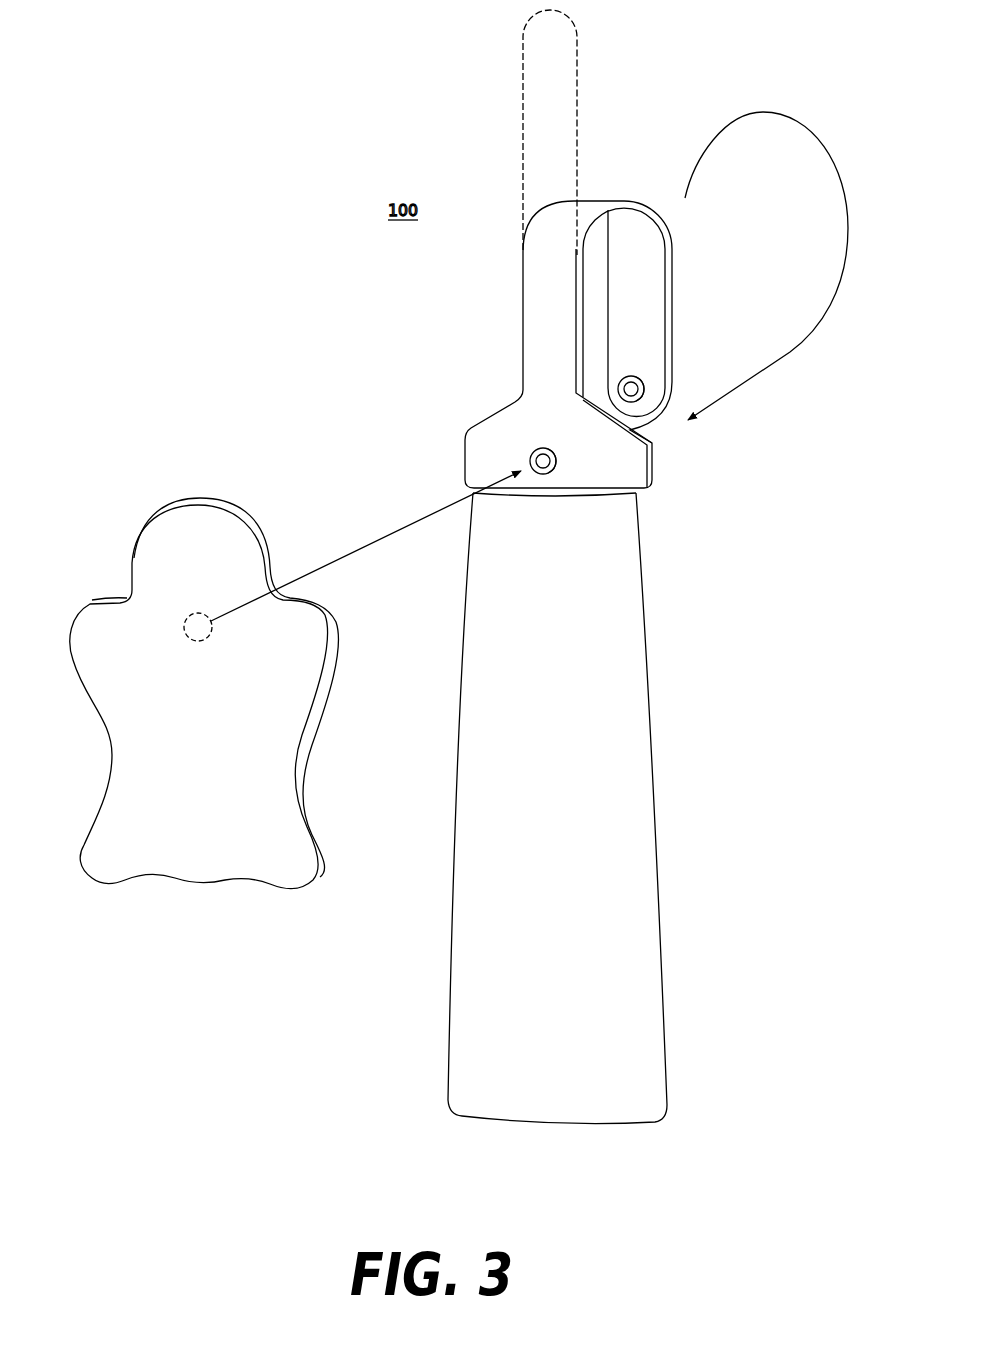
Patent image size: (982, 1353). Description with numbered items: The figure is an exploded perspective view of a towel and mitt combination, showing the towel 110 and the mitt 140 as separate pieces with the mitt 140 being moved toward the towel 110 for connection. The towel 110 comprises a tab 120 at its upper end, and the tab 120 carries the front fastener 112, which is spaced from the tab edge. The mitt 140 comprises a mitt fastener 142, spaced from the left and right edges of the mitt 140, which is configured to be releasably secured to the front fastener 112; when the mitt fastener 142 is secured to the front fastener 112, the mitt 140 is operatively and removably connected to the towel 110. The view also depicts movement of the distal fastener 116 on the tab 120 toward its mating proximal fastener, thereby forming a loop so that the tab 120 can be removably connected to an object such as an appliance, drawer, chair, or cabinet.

The towel 110 is at (660, 560).
The front fastener 112 is at (540, 447).
The distal fastener 116 is at (642, 376).
The tab 120 is at (504, 410).
The mitt 140 is at (92, 599).
The mitt fastener 142 is at (186, 635).